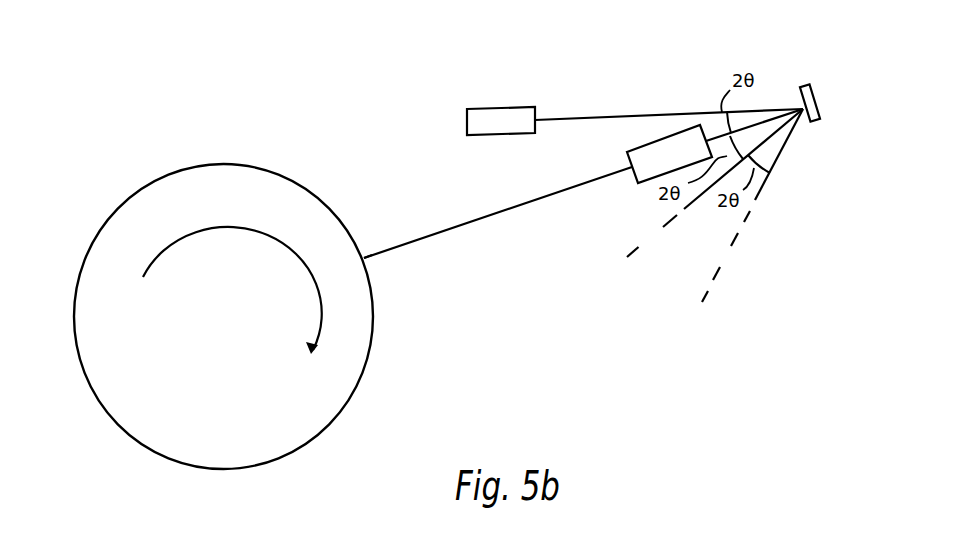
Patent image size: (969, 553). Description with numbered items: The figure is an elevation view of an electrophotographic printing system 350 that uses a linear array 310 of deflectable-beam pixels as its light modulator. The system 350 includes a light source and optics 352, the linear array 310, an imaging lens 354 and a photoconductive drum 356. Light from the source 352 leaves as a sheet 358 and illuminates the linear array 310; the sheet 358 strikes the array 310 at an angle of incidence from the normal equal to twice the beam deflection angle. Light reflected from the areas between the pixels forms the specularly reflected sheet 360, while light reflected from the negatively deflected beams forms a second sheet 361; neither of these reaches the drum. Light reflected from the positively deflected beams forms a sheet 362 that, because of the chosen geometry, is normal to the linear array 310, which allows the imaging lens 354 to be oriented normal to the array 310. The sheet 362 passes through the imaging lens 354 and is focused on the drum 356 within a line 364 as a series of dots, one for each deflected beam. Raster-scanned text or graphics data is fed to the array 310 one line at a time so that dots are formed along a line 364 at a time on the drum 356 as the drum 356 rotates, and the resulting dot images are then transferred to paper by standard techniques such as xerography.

The linear array 310 is at (817, 97).
The system 350 is at (97, 133).
The light source and optics 352 is at (537, 78).
The imaging lens 354 is at (630, 156).
The photoconductive drum 356 is at (275, 169).
The sheet of light 358 is at (617, 92).
The specularly reflected sheet 360 is at (658, 230).
The sheet from negatively deflected beams 361 is at (723, 252).
The sheet from positively deflected beams 362 is at (493, 221).
The line of dots 364 is at (368, 250).